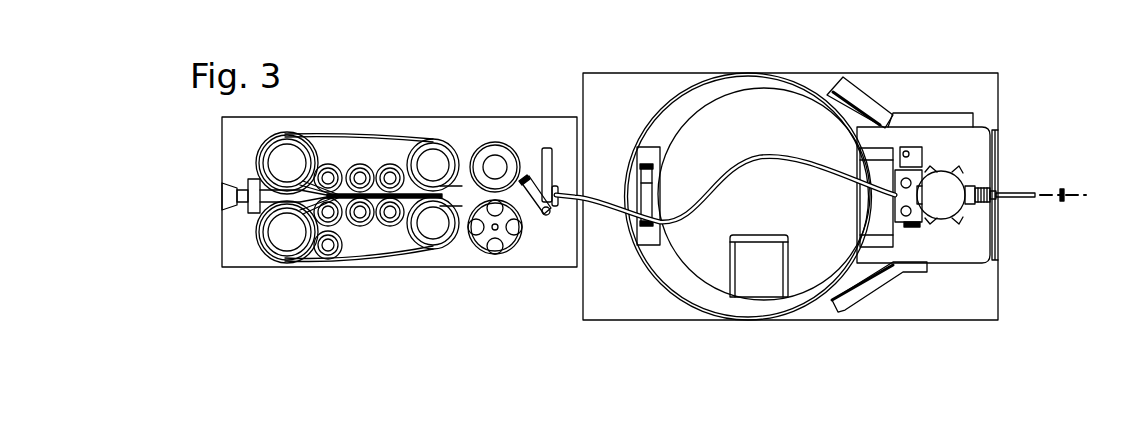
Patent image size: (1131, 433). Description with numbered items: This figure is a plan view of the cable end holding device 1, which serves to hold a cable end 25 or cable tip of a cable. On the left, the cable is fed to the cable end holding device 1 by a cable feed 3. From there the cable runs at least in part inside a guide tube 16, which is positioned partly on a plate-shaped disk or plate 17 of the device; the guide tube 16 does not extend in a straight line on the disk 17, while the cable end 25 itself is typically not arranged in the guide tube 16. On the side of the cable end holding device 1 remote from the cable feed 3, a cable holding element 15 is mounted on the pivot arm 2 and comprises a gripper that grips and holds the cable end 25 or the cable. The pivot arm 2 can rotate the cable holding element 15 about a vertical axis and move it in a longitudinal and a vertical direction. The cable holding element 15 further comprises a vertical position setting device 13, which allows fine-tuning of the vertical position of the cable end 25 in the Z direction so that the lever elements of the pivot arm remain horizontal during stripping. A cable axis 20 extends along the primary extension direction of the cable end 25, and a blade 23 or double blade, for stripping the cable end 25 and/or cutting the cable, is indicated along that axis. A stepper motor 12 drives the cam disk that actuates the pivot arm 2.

The cable end holding device 1 is at (796, 218).
The pivot arm 2 is at (655, 360).
The cable feed 3 is at (370, 82).
The stepper motor 12 is at (745, 282).
The vertical position setting device 13 is at (907, 178).
The cable holding element 15 is at (945, 218).
The guide tube 16 is at (589, 205).
The plate-shaped disk 17 is at (747, 104).
The cable axis 20 is at (1080, 200).
The blade 23 is at (1064, 162).
The cable end 25 is at (1028, 176).